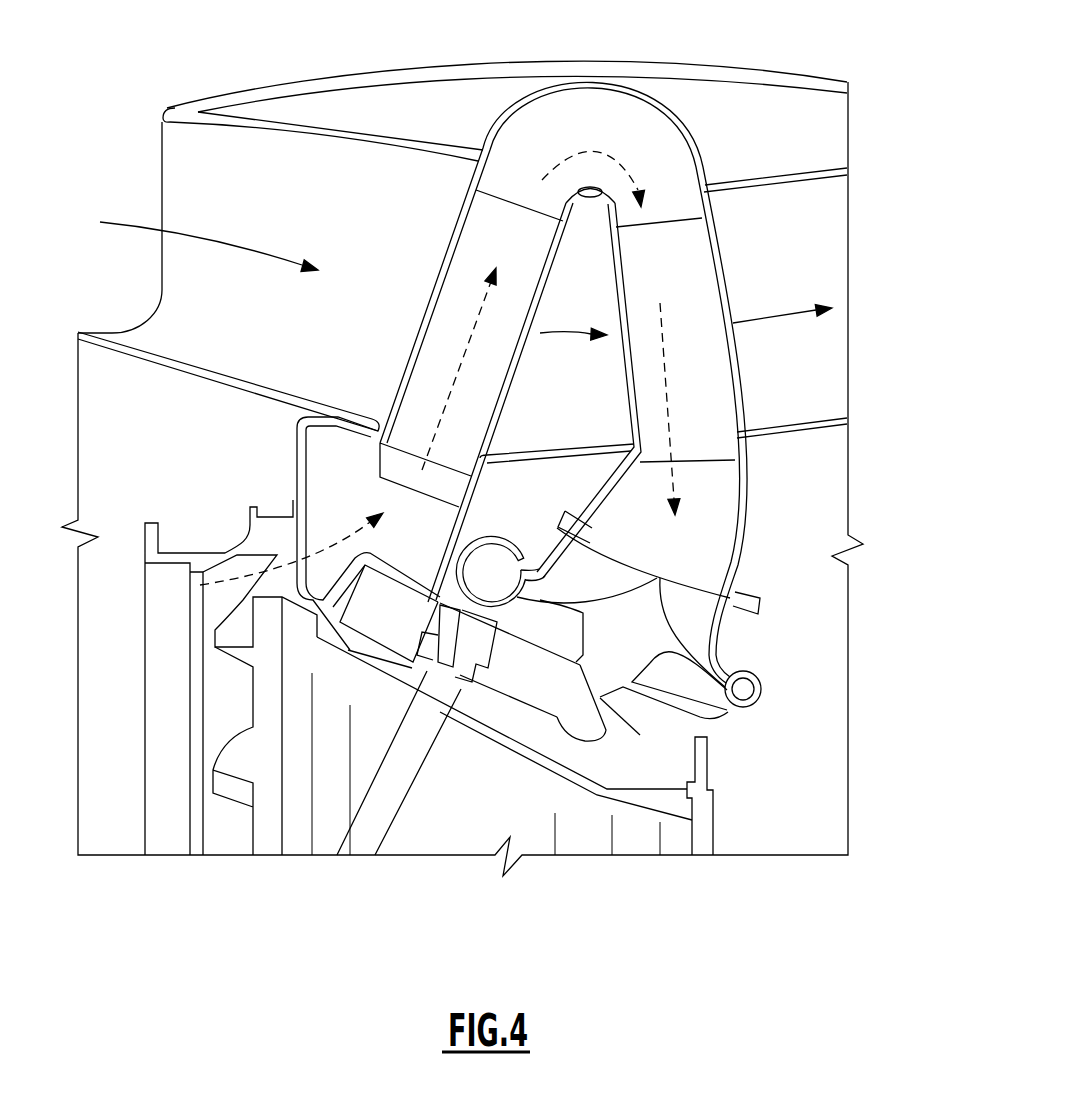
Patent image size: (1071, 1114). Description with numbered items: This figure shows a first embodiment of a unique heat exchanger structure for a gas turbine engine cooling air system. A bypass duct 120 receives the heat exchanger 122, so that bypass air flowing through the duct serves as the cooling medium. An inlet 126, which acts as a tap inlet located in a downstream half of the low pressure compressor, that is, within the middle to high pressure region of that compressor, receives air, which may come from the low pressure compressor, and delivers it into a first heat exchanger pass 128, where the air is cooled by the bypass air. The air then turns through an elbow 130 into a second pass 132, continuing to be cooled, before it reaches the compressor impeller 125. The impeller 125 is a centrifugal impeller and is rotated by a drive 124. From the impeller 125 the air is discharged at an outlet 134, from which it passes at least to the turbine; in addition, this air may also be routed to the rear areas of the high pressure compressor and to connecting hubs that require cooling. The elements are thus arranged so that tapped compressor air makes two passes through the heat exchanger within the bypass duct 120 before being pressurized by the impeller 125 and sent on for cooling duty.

The bypass duct 120 is at (327, 230).
The heat exchanger 122 is at (715, 245).
The drive 124 is at (515, 680).
The compressor impeller 125 is at (703, 762).
The inlet 126 is at (397, 455).
The first heat exchanger pass 128 is at (462, 300).
The elbow 130 is at (562, 138).
The second pass 132 is at (690, 411).
The outlet 134 is at (495, 567).